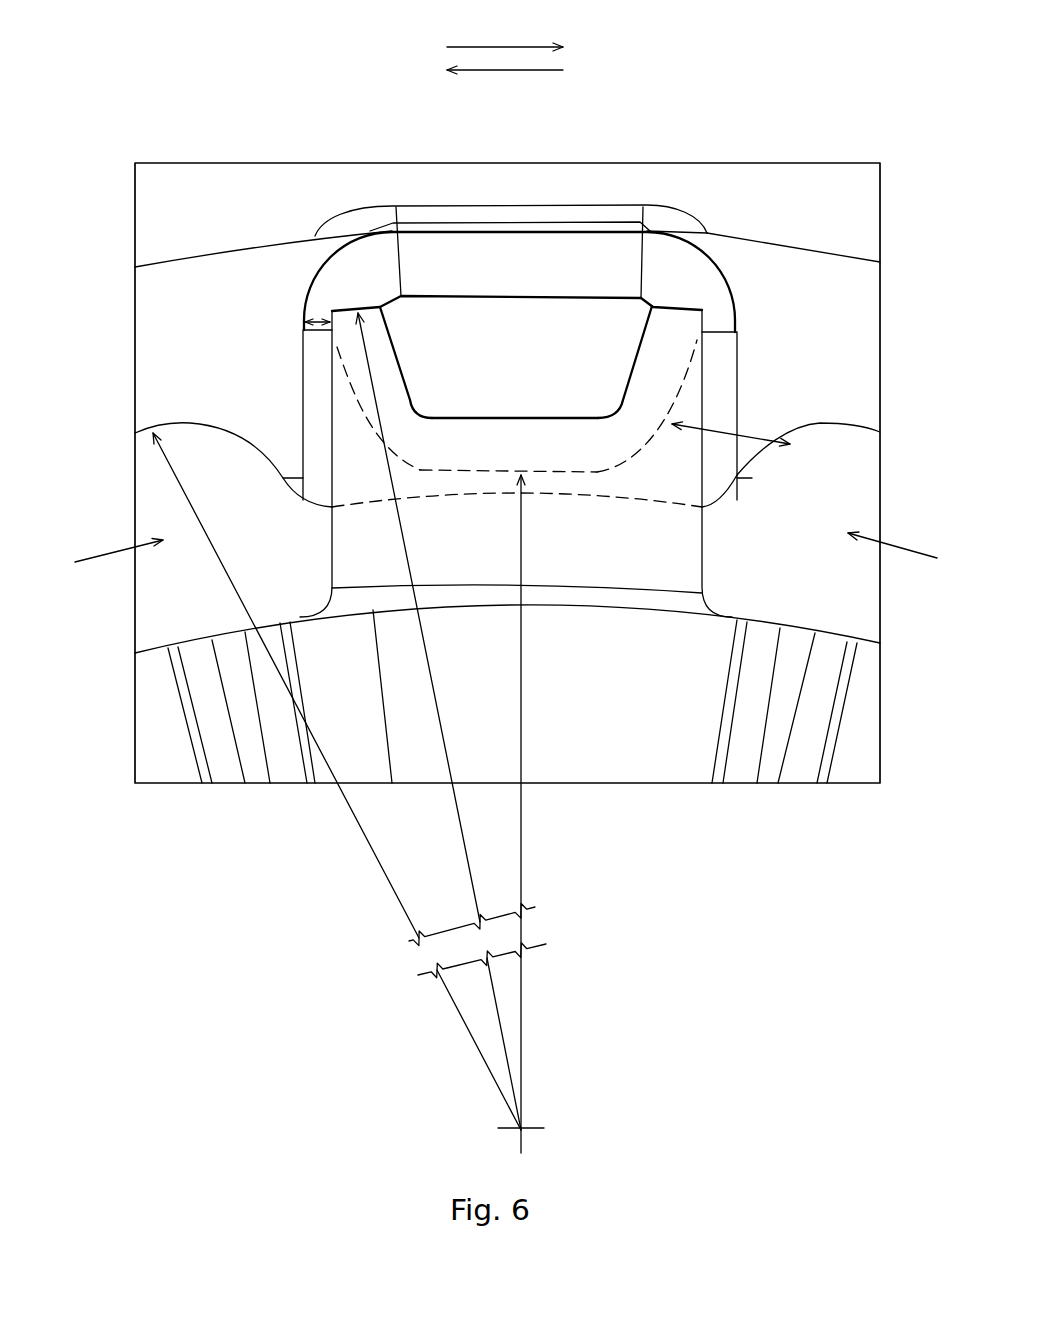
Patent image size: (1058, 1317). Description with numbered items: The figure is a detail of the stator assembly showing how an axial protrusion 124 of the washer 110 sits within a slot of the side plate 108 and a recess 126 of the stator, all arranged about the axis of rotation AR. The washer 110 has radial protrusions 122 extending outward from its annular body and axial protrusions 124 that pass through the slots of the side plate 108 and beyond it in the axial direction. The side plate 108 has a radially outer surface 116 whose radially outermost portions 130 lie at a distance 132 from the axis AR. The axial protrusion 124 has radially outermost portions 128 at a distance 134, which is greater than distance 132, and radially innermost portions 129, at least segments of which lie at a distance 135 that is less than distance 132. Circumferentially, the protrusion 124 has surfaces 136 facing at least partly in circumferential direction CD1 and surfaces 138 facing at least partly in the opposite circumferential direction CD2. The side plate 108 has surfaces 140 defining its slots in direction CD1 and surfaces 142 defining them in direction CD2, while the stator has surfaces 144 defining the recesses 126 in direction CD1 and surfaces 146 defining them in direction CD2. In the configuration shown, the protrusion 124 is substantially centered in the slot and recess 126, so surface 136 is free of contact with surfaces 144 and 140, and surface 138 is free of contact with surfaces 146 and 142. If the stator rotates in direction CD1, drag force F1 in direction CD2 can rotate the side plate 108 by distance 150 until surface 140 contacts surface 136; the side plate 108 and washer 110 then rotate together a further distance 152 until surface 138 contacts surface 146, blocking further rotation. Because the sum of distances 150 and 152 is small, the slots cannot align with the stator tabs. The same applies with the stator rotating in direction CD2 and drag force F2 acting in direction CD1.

The side plate 108 is at (863, 412).
The washer 110 is at (835, 633).
The radially outer surface 116 is at (180, 413).
The radial protrusions 122 is at (653, 474).
The axial protrusions 124 is at (482, 205).
The recesses 126 is at (499, 412).
The radially outermost portions 128 is at (677, 310).
The radially innermost portions 129 is at (575, 447).
The radially outermost portions 130 is at (860, 350).
The distance 132 is at (455, 1005).
The distance 134 is at (466, 846).
The distance 135 is at (523, 991).
The surfaces 136 is at (683, 377).
The surfaces 138 is at (356, 410).
The surfaces 140 is at (798, 425).
The surfaces 142 is at (260, 458).
The surfaces 144 is at (739, 357).
The surfaces 146 is at (303, 345).
The distance 150 is at (740, 434).
The distance 152 is at (318, 320).
The axis of rotation AR is at (515, 1128).
The circumferential direction CD1 is at (513, 42).
The circumferential direction CD2 is at (540, 70).
The drag force F1 is at (897, 543).
The drag force F2 is at (100, 556).